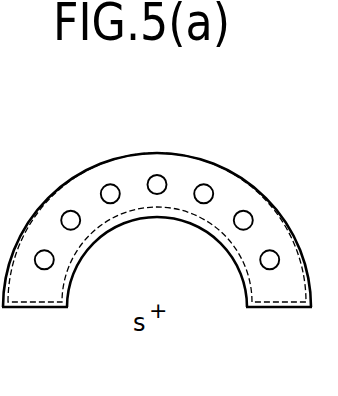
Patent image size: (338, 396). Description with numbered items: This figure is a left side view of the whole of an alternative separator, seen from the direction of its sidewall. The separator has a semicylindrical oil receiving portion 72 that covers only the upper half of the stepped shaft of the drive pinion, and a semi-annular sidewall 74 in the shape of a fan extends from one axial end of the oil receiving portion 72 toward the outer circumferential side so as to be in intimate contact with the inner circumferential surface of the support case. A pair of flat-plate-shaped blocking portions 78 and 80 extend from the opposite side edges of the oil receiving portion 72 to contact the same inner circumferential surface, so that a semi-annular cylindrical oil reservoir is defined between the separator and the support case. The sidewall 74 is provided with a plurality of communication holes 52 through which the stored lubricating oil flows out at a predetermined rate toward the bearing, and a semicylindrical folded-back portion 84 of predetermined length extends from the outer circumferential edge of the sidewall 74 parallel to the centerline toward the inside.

The communication holes 52 is at (76, 218).
The semicylindrical oil receiving portion 72 is at (172, 219).
The semi-annular sidewall 74 is at (180, 171).
The blocking portion 78 is at (274, 308).
The blocking portion 80 is at (33, 308).
The semicylindrical folded-back portion 84 is at (117, 156).